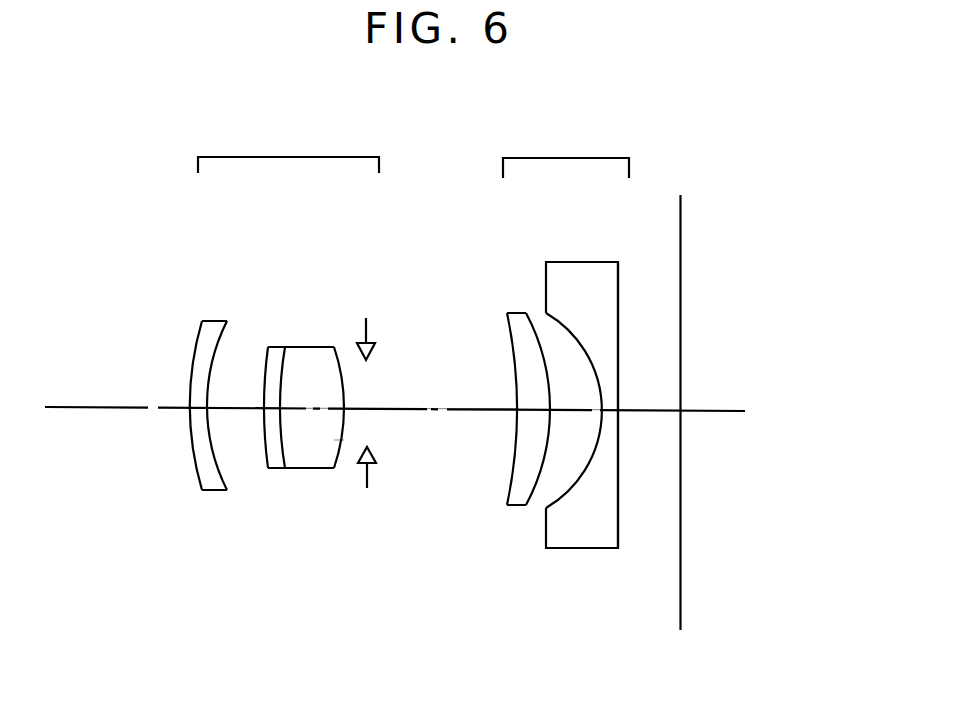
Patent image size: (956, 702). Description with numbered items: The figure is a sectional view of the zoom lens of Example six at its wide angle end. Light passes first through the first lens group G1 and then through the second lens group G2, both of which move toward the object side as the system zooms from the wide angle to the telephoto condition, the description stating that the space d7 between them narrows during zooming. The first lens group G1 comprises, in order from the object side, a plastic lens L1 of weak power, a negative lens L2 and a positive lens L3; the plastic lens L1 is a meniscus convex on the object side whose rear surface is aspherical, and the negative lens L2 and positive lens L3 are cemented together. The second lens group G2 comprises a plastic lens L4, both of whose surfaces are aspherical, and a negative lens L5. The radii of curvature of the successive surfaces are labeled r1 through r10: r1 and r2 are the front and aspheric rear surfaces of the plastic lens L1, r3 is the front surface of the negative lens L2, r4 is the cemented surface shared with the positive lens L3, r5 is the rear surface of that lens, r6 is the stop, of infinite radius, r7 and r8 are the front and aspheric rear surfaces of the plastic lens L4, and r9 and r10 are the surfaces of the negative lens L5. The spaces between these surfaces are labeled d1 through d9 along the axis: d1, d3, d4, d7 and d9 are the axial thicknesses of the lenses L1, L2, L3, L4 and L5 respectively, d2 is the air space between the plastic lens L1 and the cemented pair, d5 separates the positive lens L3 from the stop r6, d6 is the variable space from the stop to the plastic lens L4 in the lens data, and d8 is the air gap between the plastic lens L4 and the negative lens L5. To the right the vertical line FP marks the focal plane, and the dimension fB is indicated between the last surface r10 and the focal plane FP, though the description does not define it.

The first lens group G1 is at (273, 302).
The second lens group G2 is at (562, 331).
The plastic lens L1 is at (201, 337).
The negative lens L2 is at (284, 326).
The positive lens L3 is at (318, 326).
The plastic lens L4 is at (503, 344).
The negative lens L5 is at (606, 366).
The radius of curvature of lens surface r1 is at (192, 338).
The radius of curvature of lens surface r2 is at (227, 338).
The radius of curvature of lens surface r3 is at (265, 362).
The radius of curvature of lens surface r4 is at (290, 363).
The radius of curvature of lens surface r5 is at (337, 352).
The stop r6 is at (365, 370).
The radius of curvature of lens surface r7 is at (510, 347).
The radius of curvature of lens surface r8 is at (532, 318).
The radius of curvature of lens surface r9 is at (557, 312).
The radius of curvature of lens surface r10 is at (618, 292).
The space between lens surfaces d1 is at (202, 410).
The space between lens surfaces d2 is at (235, 426).
The space between lens surfaces d3 is at (273, 470).
The space between lens surfaces d4 is at (312, 426).
The space between lens surfaces d5 is at (341, 472).
The space between lens surfaces d6 is at (430, 427).
The space between lens surfaces d7 is at (530, 417).
The space between lens surfaces d8 is at (576, 429).
The space between lens surfaces d9 is at (607, 413).
The back focal distance fB is at (662, 413).
The focal plane FP is at (682, 205).